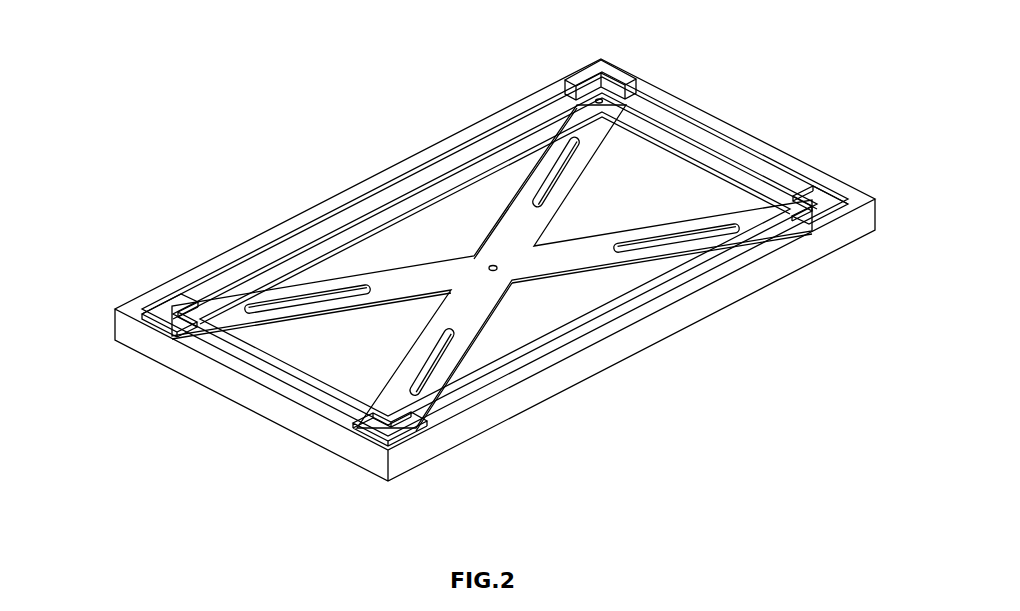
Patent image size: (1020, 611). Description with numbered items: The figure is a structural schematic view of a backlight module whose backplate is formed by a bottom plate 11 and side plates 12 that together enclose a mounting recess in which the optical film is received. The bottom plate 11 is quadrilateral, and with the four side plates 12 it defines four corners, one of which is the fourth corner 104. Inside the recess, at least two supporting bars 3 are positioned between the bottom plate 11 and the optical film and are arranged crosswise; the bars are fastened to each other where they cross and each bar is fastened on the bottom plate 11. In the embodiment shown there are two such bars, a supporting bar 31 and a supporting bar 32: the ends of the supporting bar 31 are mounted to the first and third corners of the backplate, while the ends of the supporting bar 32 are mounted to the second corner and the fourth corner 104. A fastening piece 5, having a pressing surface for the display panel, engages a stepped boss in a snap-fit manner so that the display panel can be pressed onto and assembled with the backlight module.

The fourth corner 104 is at (586, 66).
The bottom plate 11 is at (650, 173).
The side plates 12 is at (675, 322).
The supporting bars 3 is at (492, 283).
The supporting bar 31 is at (588, 253).
The supporting bar 32 is at (468, 342).
The fastening piece 5 is at (143, 305).